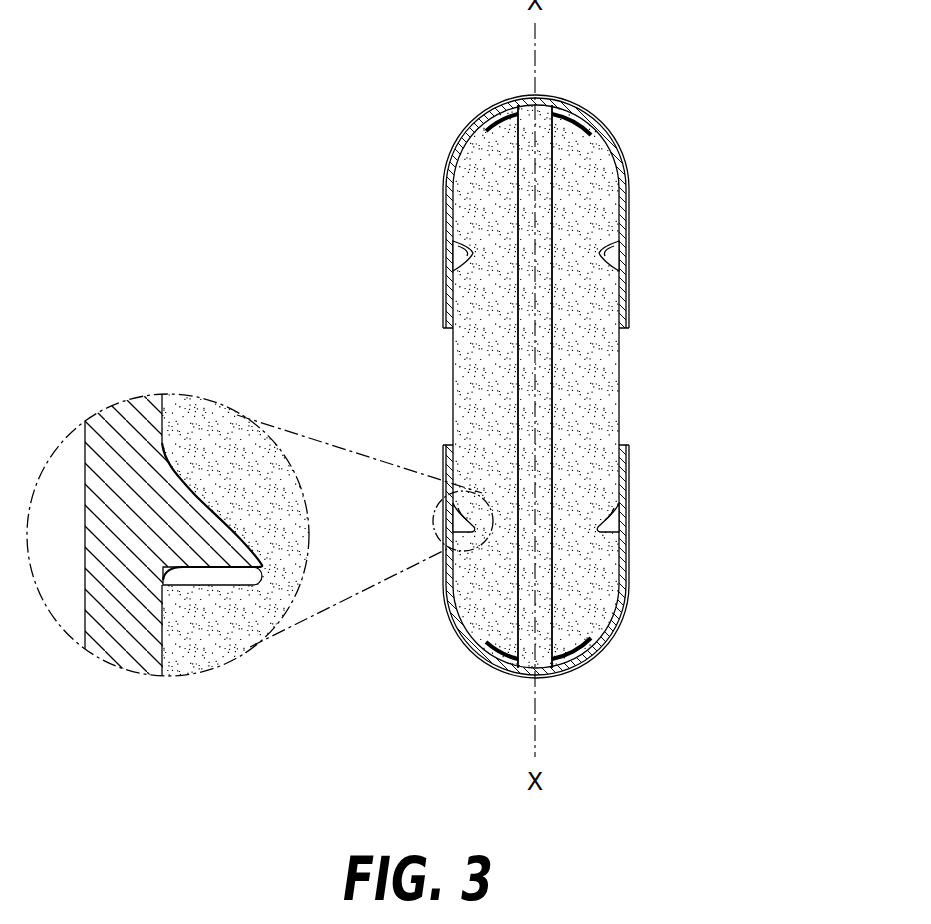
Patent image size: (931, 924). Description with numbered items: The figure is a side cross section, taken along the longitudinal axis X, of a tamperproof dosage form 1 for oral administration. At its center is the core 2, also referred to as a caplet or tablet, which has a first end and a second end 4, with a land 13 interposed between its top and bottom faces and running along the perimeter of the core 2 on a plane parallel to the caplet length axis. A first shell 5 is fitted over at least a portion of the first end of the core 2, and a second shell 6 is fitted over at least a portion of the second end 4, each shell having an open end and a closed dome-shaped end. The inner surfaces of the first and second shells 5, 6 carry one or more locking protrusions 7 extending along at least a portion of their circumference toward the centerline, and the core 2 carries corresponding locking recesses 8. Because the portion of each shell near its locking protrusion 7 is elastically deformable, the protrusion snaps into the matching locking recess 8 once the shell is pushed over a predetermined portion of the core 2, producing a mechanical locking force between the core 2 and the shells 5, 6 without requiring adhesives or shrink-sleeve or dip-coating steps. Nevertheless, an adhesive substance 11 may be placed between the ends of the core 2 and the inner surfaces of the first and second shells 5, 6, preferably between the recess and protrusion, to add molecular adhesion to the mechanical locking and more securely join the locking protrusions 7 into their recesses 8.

The tamperproof dosage form 1 is at (414, 390).
The core 2 is at (592, 187).
The second end 4 is at (498, 667).
The first shell 5 is at (452, 168).
The second shell 6 is at (637, 557).
The locking protrusion 7 is at (615, 257).
The locking recess 8 is at (603, 235).
The adhesive substance 11 is at (505, 113).
The land 13 is at (460, 128).